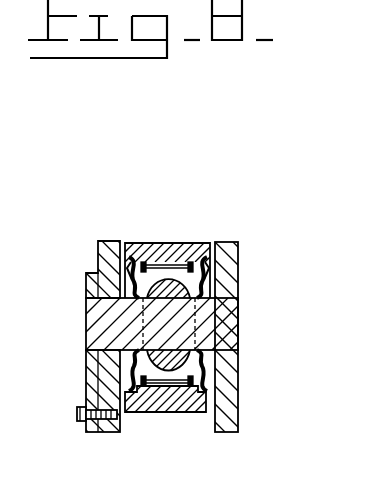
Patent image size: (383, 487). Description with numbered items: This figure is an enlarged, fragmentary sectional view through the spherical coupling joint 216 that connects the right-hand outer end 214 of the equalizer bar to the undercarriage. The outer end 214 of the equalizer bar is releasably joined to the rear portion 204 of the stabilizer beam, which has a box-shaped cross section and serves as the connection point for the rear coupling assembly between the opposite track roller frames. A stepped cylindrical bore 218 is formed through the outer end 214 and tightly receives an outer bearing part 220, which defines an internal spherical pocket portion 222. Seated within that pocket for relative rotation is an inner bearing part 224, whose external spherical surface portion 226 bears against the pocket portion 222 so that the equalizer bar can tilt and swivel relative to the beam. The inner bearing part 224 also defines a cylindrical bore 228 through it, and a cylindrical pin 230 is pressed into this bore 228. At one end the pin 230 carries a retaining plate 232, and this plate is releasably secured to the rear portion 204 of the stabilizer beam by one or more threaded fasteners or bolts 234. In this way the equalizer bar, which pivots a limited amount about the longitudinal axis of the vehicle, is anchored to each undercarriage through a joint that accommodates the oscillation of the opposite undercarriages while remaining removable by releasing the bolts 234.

The rear portion of the stabilizer beam 204 is at (228, 260).
The outer end of the equalizer bar 214 is at (178, 250).
The spherical coupling joint 216 is at (78, 289).
The stepped cylindrical bore 218 is at (168, 386).
The outer bearing part 220 is at (177, 412).
The internal spherical pocket portion 222 is at (192, 350).
The inner bearing part 224 is at (188, 263).
The external spherical surface portion 226 is at (161, 266).
The cylindrical bore 228 is at (182, 296).
The cylindrical pin 230 is at (117, 317).
The retaining plate 232 is at (92, 370).
The threaded fastener 234 is at (78, 413).